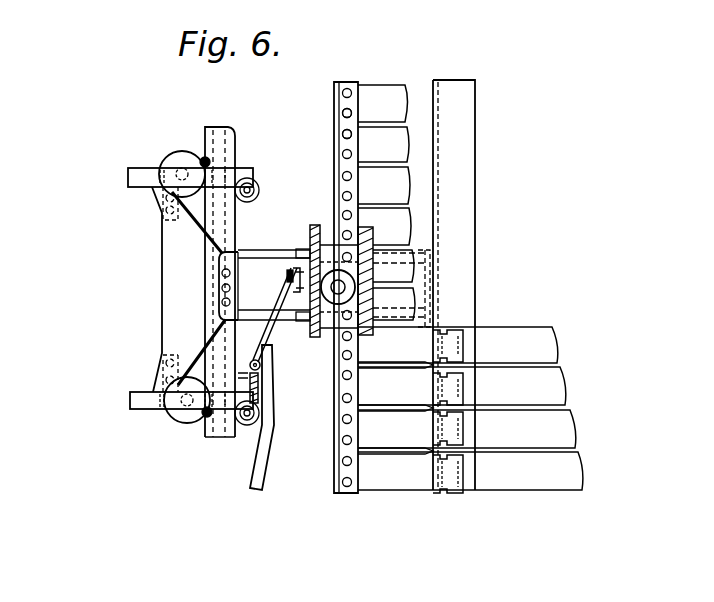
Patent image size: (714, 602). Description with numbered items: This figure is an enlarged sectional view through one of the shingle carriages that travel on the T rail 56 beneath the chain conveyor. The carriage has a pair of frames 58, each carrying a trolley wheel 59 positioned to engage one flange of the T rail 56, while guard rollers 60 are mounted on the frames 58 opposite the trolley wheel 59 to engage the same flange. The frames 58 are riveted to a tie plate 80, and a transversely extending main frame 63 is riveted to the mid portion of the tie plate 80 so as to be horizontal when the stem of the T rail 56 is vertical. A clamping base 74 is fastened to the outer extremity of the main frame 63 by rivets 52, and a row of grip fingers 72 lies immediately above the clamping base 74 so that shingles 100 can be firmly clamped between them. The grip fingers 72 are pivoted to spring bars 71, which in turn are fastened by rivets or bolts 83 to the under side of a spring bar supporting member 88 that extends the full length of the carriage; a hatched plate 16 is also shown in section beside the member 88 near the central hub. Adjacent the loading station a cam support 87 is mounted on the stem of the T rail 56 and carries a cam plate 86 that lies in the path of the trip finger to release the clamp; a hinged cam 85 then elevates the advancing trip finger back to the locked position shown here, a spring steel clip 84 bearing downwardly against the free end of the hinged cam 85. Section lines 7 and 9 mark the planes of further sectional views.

The section line 7- 7 is at (75, 293).
The section line 9- 9 is at (421, 432).
The hatched plate 16 is at (333, 232).
The rivets 52 is at (432, 256).
The T rail 56 is at (212, 430).
The frames 58 is at (148, 168).
The trolley wheel 59 is at (192, 153).
The guard rollers 60 is at (250, 203).
The main frame 63 is at (245, 270).
The spring bars 71 is at (390, 90).
The grip fingers 72 is at (472, 378).
The clamping base 74 is at (476, 236).
The tie plate 80 is at (161, 254).
The rivets or bolts 83 is at (342, 132).
The spring steel clip 84 is at (287, 282).
The hinged cam 85 is at (275, 315).
The cam plate 86 is at (276, 472).
The cam support 87 is at (254, 360).
The spring bar supporting member 88 is at (340, 84).
The shingles 100 is at (556, 362).